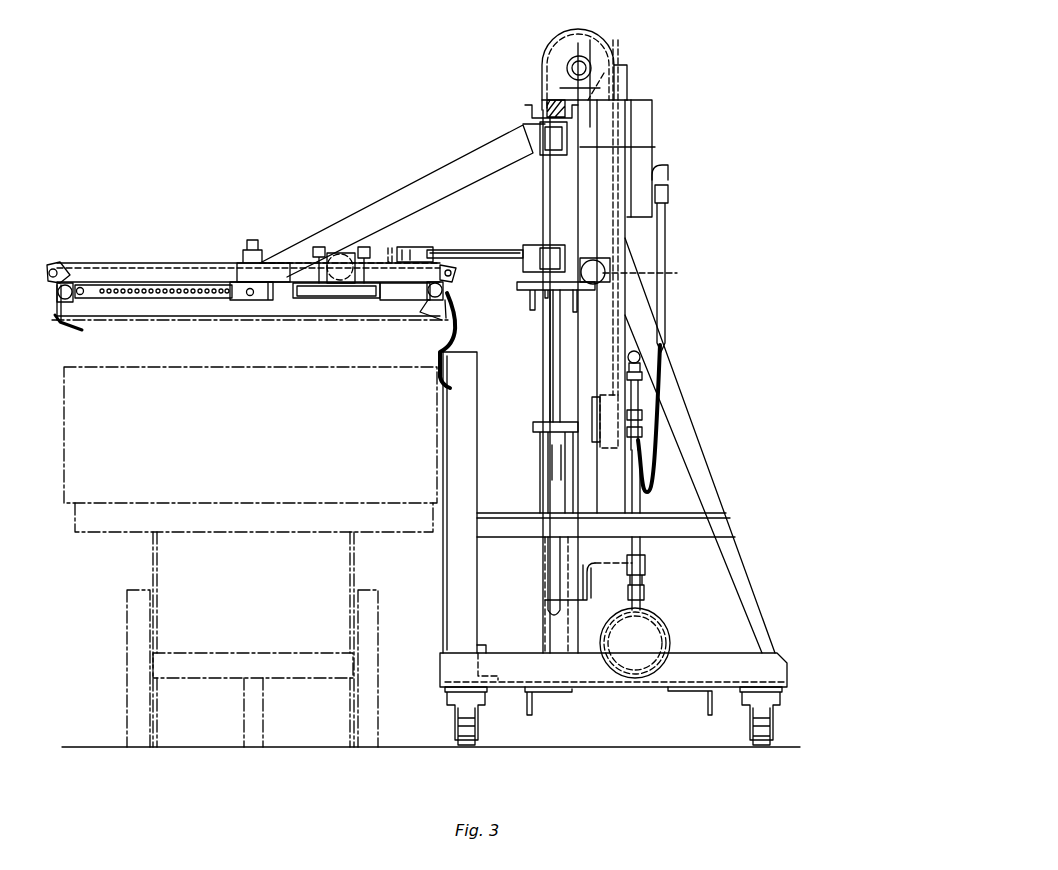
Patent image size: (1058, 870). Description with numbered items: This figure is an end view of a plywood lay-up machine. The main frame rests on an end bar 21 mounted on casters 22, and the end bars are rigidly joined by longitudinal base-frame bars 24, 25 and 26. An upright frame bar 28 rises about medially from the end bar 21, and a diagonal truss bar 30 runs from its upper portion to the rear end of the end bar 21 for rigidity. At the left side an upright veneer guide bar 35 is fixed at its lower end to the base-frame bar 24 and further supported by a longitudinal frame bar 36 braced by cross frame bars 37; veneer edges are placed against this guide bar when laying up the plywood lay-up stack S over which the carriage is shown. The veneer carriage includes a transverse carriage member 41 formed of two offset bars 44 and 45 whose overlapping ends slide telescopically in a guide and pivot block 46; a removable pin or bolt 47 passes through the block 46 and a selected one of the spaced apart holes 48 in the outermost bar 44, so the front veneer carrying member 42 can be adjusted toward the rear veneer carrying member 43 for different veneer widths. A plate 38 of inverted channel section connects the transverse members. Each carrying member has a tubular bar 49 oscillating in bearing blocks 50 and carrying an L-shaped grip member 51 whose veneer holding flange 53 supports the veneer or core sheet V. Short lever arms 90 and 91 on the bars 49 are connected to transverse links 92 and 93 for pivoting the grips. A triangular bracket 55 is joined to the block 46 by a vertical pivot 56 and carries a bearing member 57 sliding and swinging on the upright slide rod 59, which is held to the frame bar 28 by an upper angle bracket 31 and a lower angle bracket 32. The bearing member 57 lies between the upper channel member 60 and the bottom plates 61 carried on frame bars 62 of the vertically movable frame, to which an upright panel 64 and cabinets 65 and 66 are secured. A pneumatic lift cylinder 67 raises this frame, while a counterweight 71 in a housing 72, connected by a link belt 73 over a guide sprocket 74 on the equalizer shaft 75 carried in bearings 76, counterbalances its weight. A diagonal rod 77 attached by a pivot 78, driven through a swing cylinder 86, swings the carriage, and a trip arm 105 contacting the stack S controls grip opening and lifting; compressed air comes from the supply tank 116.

The end bar 21 is at (716, 662).
The casters 22 is at (752, 733).
The base-frame bar 24 is at (484, 647).
The base-frame bar 25 is at (534, 705).
The base-frame bar 26 is at (707, 704).
The upright frame bar 28 is at (600, 392).
The diagonal truss bar 30 is at (700, 492).
The upper angle bracket 31 is at (602, 90).
The lower angle bracket 32 is at (545, 605).
The upright veneer guide bar 35 is at (468, 462).
The longitudinal frame bar 36 is at (490, 512).
The cross frame bars 37 is at (686, 537).
The plate 38 is at (348, 302).
The transverse carriage member 41 is at (224, 308).
The front veneer carrying member 42 is at (45, 290).
The rear veneer carrying member 43 is at (422, 320).
The outermost bar 44 is at (182, 284).
The bar 45 is at (318, 300).
The guide and pivot block 46 is at (268, 302).
The removable pin or bolt 47 is at (250, 300).
The spaced apart holes 48 is at (150, 288).
The tubular bar or rod 49 is at (62, 268).
The bearing blocks 50 is at (72, 298).
The grip or veneer holding member 51 is at (48, 310).
The veneer holding flanges 53 is at (64, 328).
The triangularly shaped bracket 55 is at (497, 190).
The vertical pivot 56 is at (255, 240).
The bearing members 57 is at (542, 144).
The upright slide shaft or rod 59 is at (552, 357).
The upper horizontal channel member 60 is at (526, 108).
The bottom plates 61 is at (527, 292).
The frame bars 62 is at (575, 312).
The upright panel 64 is at (630, 142).
The cabinet 65 is at (645, 112).
The cabinet 66 is at (634, 136).
The pneumatic lift cylinder 67 is at (540, 558).
The counterweights 71 is at (642, 395).
The housings 72 is at (660, 420).
The link belts 73 is at (621, 74).
The guide sprockets 74 is at (578, 42).
The equalizer shaft 75 is at (586, 66).
The bearings 76 is at (554, 52).
The diagonal rod 77 is at (492, 250).
The pivot 78 is at (414, 247).
The hydraulic cylinder 86 is at (640, 271).
The short lever arm 90 is at (48, 272).
The short lever arm 91 is at (454, 278).
The transverse link 92 is at (137, 262).
The transverse link 93 is at (392, 250).
The trip arm 105 is at (452, 341).
The air pressure supply tank 116 is at (660, 635).
The plywood lay-up stack S is at (258, 448).
The veneer or core sheet V is at (140, 326).